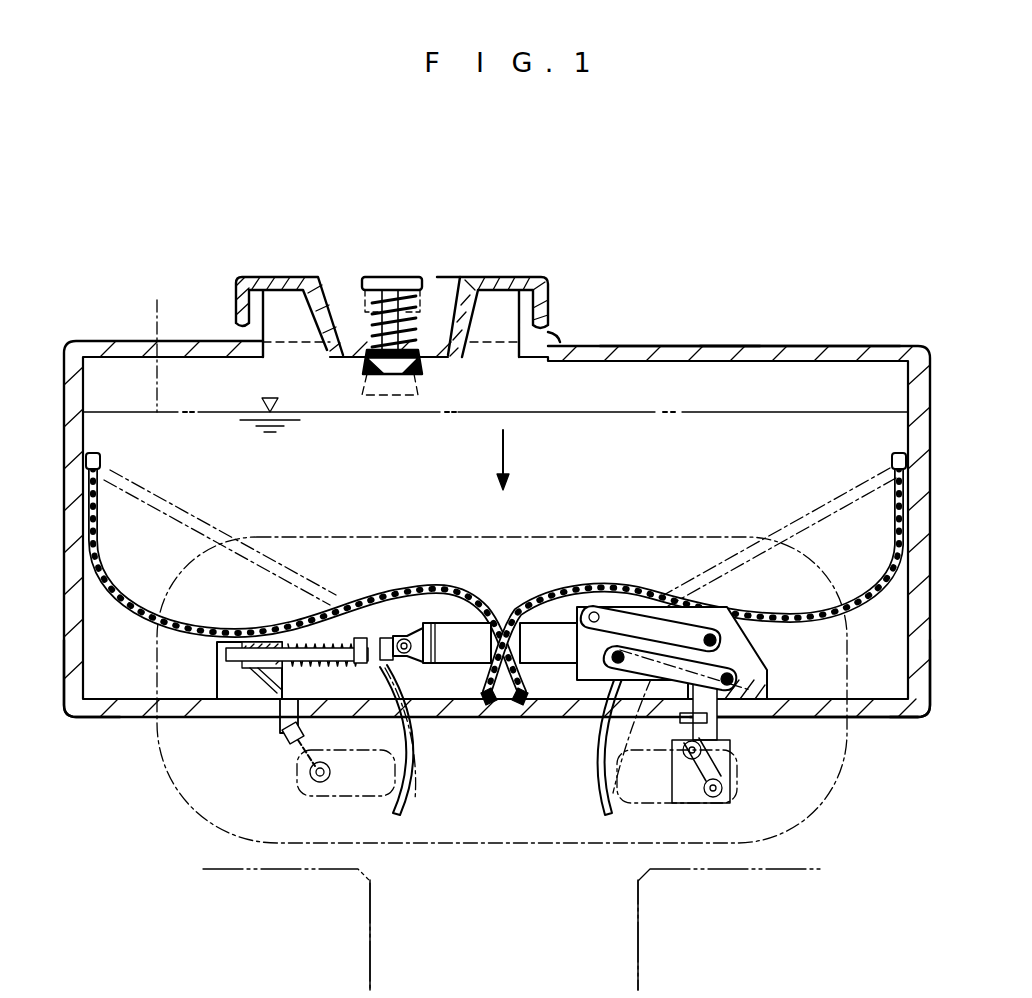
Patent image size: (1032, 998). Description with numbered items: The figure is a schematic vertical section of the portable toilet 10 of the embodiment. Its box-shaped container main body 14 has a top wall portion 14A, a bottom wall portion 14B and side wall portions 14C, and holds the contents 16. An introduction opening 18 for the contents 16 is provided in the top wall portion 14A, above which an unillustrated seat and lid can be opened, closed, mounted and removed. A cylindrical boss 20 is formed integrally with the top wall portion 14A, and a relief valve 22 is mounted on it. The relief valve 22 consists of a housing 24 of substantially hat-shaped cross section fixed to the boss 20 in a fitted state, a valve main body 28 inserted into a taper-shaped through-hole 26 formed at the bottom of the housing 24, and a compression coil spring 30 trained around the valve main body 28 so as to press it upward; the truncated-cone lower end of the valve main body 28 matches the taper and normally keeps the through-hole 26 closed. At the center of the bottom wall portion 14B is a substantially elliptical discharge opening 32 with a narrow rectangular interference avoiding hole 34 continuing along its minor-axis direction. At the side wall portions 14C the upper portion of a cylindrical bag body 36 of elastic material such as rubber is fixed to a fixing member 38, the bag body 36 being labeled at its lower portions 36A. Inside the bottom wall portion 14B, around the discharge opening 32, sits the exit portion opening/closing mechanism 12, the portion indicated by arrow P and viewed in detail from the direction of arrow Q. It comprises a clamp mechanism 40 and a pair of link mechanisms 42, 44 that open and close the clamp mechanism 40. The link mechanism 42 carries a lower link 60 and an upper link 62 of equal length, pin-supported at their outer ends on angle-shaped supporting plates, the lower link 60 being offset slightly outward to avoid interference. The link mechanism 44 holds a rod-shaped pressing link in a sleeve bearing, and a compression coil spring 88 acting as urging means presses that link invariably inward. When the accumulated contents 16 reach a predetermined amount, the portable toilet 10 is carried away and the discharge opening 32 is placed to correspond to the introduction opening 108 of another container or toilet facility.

The portable toilet 10 is at (768, 282).
The exit portion opening/closing mechanism 12 is at (596, 558).
The container main body 14 is at (879, 346).
The top wall portion 14A is at (724, 345).
The bottom wall portion 14B is at (893, 715).
The side wall portions 14C is at (66, 714).
The contents 16 is at (148, 341).
The introduction opening 18 is at (665, 350).
The cylindrical boss 20 is at (558, 335).
The relief valve 22 is at (459, 270).
The housing 24 is at (509, 278).
The taper-shaped through-hole 26 is at (402, 396).
The valve main body 28 is at (398, 276).
The compression coil spring 30 is at (364, 320).
The discharge opening 32 is at (297, 700).
The interference avoiding hole 34 is at (237, 720).
The cylindrical bag body 36 is at (203, 542).
The hose end portion 36A is at (520, 598).
The fixing member 38 is at (97, 460).
The clamp mechanism 40 is at (455, 668).
The link mechanism 42 is at (661, 692).
The link mechanism 44 is at (329, 636).
The lower link 60 is at (700, 605).
The upper link 62 is at (675, 660).
The compression coil spring 88 is at (307, 628).
The introduction opening 108 is at (640, 923).
The arrow P is at (880, 790).
The arrow Q is at (512, 450).